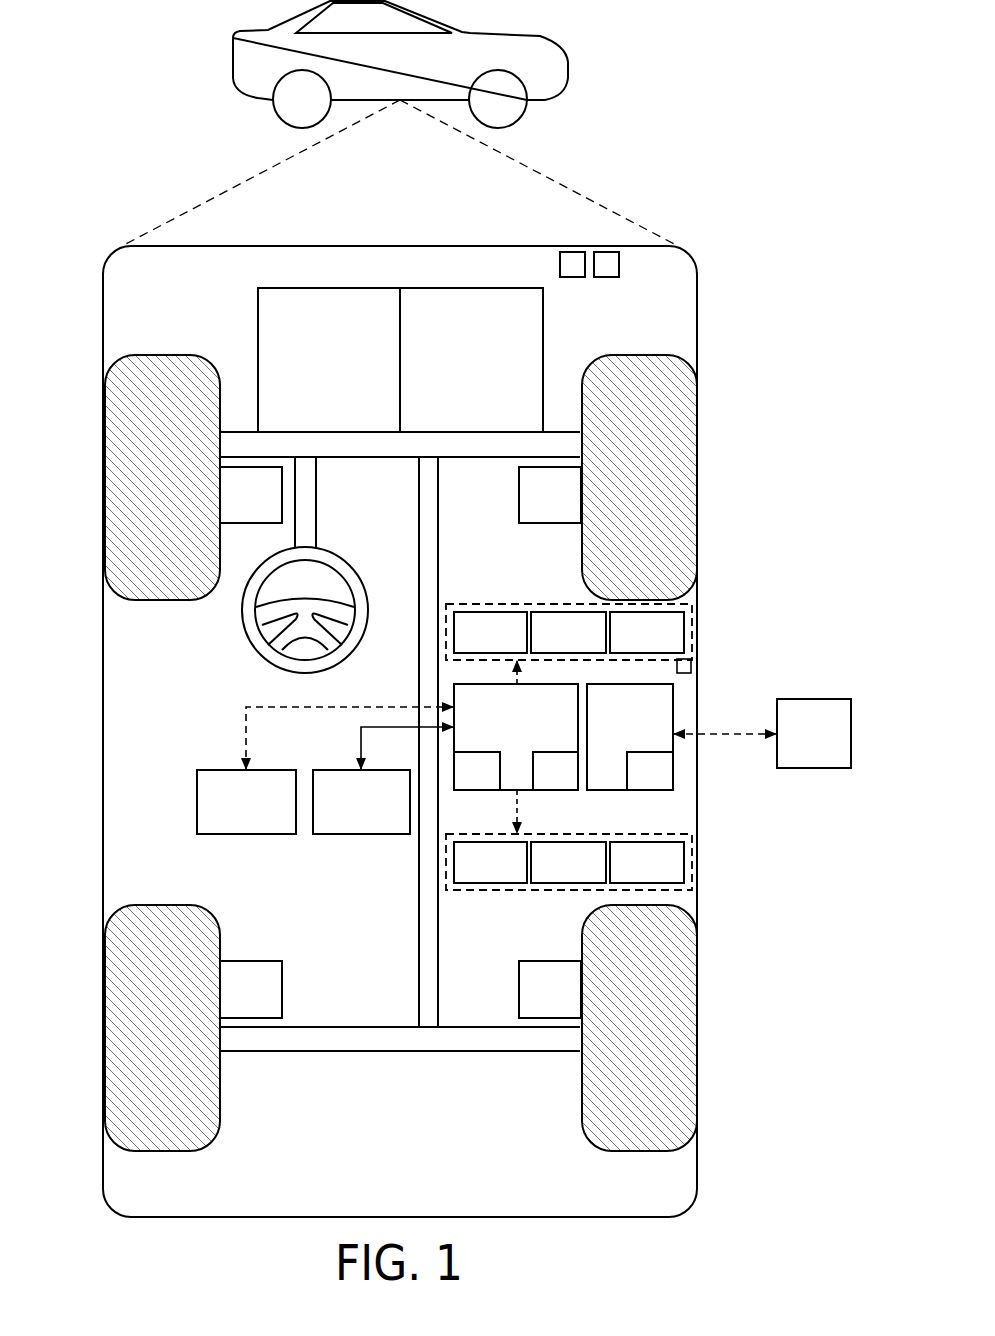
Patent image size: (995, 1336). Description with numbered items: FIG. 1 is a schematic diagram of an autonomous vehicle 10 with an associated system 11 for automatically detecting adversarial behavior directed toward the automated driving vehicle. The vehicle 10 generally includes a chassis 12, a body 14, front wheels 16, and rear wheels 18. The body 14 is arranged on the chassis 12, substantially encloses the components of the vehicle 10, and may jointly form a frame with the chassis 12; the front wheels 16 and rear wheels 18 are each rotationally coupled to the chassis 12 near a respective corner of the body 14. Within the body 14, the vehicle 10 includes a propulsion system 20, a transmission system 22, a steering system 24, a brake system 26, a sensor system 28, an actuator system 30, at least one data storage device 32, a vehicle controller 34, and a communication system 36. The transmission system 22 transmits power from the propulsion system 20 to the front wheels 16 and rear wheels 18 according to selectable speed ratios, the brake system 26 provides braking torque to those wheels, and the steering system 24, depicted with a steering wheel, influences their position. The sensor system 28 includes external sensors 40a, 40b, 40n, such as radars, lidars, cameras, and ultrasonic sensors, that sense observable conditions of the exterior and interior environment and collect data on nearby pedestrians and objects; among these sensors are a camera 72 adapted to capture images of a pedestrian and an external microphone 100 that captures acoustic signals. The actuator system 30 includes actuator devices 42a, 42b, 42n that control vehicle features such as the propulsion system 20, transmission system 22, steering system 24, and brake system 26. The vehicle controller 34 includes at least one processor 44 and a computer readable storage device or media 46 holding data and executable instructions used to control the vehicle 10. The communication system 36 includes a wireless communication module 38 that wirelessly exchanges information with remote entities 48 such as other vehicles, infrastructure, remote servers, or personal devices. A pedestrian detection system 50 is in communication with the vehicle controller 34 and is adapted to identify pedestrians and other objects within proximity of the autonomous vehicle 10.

The vehicle 10 is at (414, 79).
The system 11 is at (694, 219).
The chassis 12 is at (419, 932).
The body 14 is at (103, 733).
The front wheels 16 is at (160, 355).
The rear wheels 18 is at (162, 1151).
The propulsion system 20 is at (343, 372).
The transmission system 22 is at (486, 372).
The steering system 24 is at (342, 500).
The brake system 26 is at (264, 507).
The sensor system 28 is at (569, 608).
The actuator system 30 is at (569, 883).
The data storage device 32 is at (375, 814).
The vehicle controller 34 is at (516, 737).
The communication system 36 is at (639, 724).
The wireless communication module 38 is at (664, 781).
The external sensor 40a is at (512, 643).
The external sensor 40b is at (590, 643).
The external sensor 40n is at (668, 643).
The actuator device 42a is at (512, 873).
The actuator device 42b is at (590, 873).
The actuator device 42n is at (668, 873).
The processor 44 is at (491, 781).
The computer readable storage device or media 46 is at (570, 781).
The remote entities 48 is at (828, 746).
The pedestrian detection system 50 is at (260, 814).
The camera 72 is at (619, 264).
The external microphone 100 is at (575, 270).